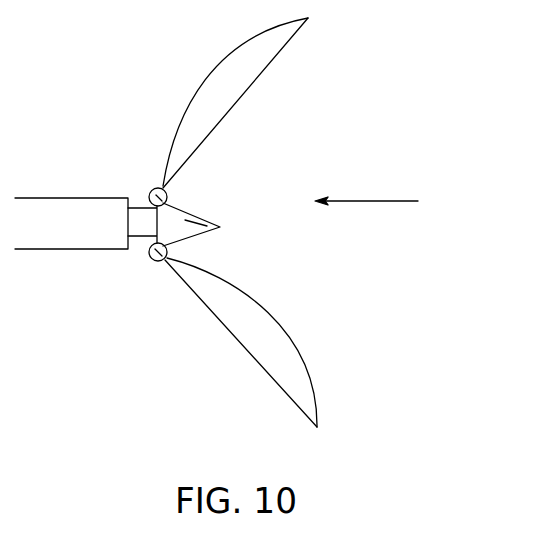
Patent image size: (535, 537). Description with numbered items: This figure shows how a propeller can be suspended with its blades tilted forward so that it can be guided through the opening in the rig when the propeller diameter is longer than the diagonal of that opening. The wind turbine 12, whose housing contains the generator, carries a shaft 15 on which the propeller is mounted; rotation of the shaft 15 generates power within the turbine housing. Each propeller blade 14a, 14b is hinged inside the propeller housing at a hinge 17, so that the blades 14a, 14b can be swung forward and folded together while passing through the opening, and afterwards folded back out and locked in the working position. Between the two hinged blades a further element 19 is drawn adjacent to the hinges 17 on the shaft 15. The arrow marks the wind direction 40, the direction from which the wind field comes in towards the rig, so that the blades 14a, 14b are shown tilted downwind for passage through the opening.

The wind turbine 12 is at (83, 213).
The propeller blade 14a is at (255, 85).
The propeller blade 14b is at (263, 325).
The shaft 15 is at (147, 228).
The hinge 17 is at (170, 192).
The spring 19 is at (220, 226).
The wind direction 40 is at (382, 203).